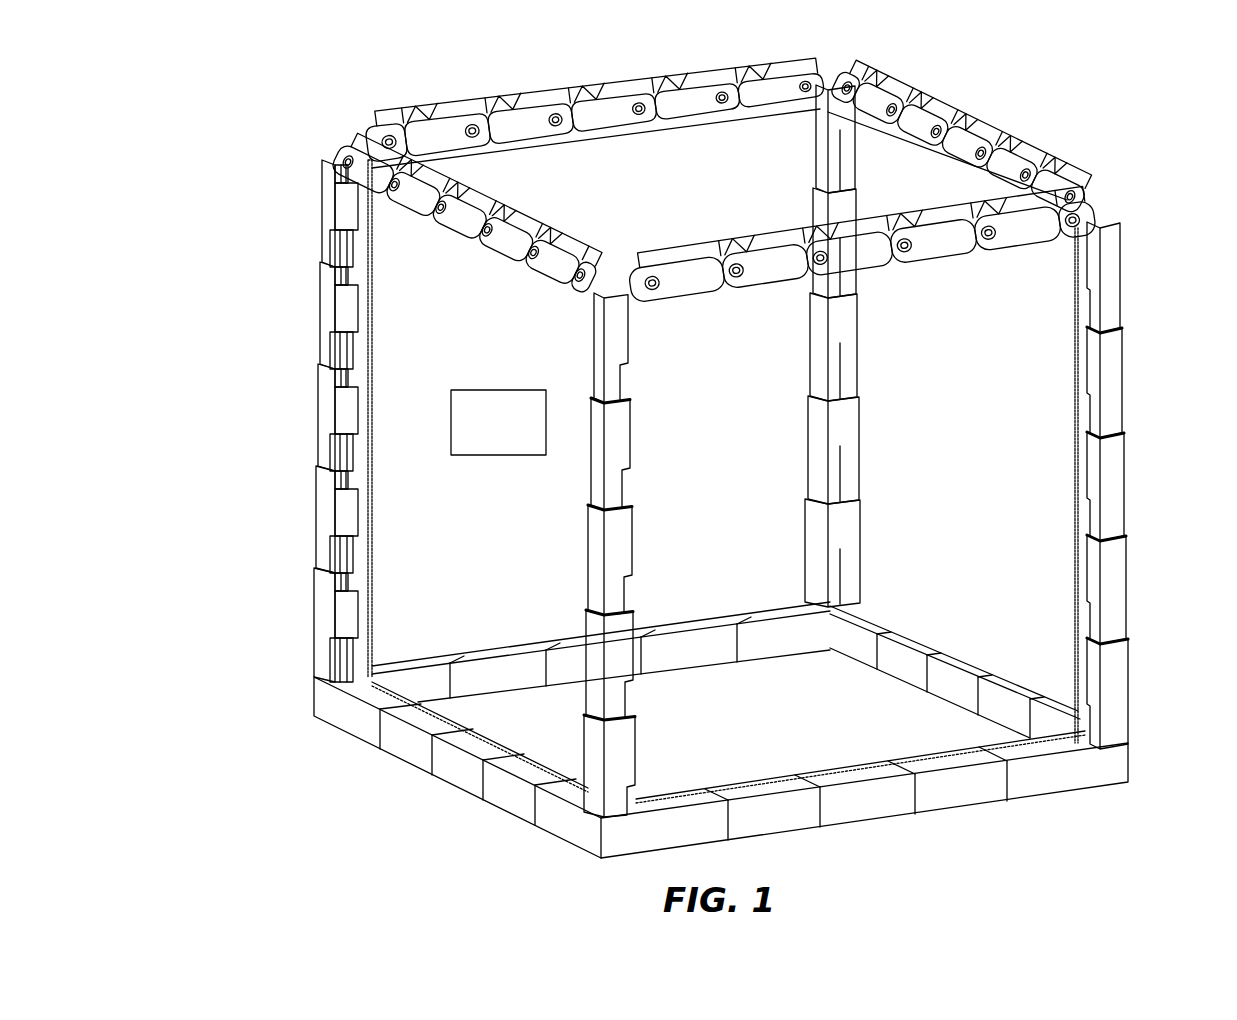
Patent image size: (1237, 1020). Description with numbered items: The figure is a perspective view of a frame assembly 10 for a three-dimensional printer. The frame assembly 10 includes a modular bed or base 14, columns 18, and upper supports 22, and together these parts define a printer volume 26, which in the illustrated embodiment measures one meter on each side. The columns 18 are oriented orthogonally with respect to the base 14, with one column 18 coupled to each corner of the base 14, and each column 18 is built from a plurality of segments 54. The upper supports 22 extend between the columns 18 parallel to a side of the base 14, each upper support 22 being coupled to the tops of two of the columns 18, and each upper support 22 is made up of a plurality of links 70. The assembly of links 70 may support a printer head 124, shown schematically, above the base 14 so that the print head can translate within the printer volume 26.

The frame assembly 10 is at (318, 88).
The base 14 is at (426, 746).
The columns 18 is at (314, 520).
The upper supports 22 is at (457, 110).
The printer volume 26 is at (648, 182).
The segments 54 is at (330, 413).
The links 70 is at (676, 106).
The printer head 124 is at (499, 255).